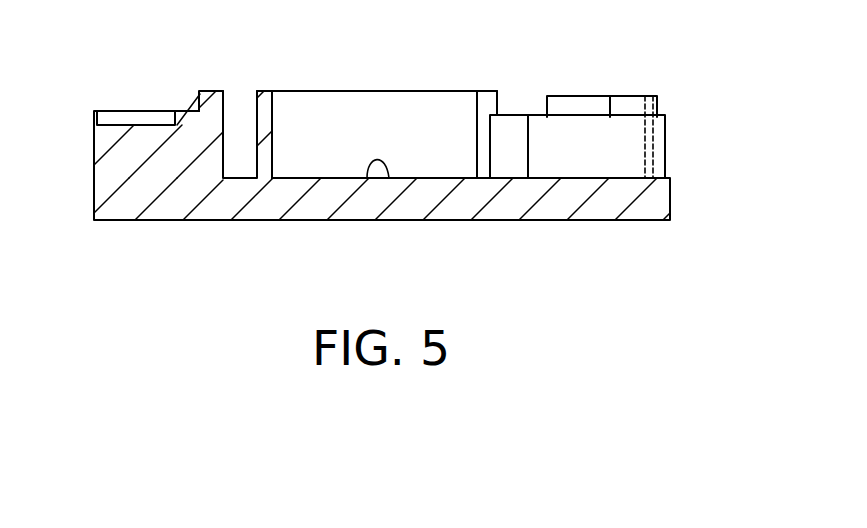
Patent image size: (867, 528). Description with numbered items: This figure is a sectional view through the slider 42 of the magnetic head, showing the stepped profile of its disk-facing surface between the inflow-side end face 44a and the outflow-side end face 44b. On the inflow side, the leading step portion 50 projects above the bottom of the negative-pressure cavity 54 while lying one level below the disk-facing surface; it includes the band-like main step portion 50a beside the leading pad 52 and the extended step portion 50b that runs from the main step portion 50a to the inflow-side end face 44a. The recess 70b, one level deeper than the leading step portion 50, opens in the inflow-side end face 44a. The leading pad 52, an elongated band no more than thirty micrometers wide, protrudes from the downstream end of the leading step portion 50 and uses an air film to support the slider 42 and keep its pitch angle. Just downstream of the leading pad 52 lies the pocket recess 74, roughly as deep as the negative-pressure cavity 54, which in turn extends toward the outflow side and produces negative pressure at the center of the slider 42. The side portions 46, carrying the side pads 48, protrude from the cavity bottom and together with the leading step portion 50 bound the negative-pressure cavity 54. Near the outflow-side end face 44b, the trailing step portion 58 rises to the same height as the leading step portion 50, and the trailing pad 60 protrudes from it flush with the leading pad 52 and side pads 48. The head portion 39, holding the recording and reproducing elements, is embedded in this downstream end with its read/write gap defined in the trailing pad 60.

The slider 42 is at (233, 242).
The inflow-side end face 44a is at (95, 183).
The outflow-side end face 44b is at (670, 190).
The side portions 46 is at (380, 110).
The side pad 48 is at (428, 90).
The leading step portion 50 is at (122, 143).
The main step portion 50a is at (197, 110).
The extended step portion 50b is at (109, 110).
The leading pad 52 is at (201, 90).
The negative-pressure cavity 54 is at (389, 178).
The trailing step portion 58 is at (565, 155).
The trailing pad 60 is at (568, 95).
The recess 70b is at (143, 120).
The pocket recess 74 is at (240, 107).
The head portion 39 is at (652, 95).